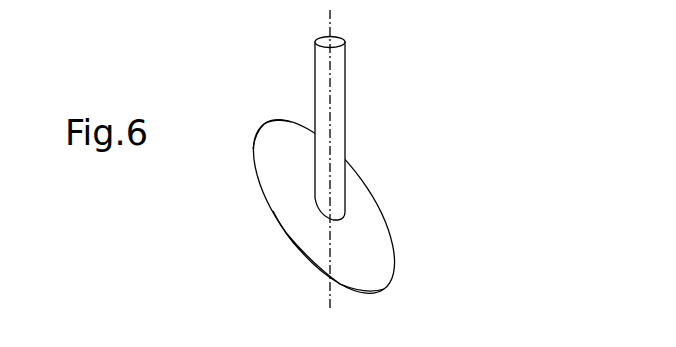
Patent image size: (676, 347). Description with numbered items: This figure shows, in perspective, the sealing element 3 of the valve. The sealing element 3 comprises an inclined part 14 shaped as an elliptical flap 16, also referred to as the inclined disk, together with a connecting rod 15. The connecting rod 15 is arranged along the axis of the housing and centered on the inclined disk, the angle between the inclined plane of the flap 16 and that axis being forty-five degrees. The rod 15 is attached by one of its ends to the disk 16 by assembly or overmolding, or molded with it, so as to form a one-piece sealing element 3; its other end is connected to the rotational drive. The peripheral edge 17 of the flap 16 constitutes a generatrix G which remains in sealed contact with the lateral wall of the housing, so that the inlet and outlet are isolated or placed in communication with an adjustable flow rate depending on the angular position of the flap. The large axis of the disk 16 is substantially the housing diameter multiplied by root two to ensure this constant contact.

The sealing element 3 is at (417, 190).
The inclined part 14 is at (310, 262).
The connecting rod 15 is at (337, 88).
The elliptical flap 16 is at (288, 209).
The peripheral edge 17 is at (252, 143).
The generatrix G is at (394, 272).